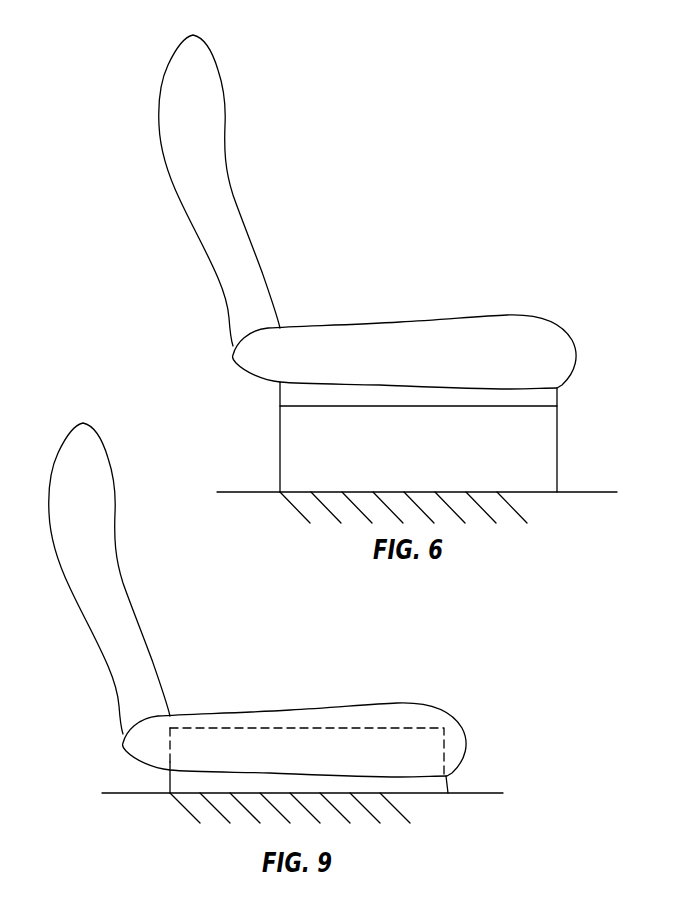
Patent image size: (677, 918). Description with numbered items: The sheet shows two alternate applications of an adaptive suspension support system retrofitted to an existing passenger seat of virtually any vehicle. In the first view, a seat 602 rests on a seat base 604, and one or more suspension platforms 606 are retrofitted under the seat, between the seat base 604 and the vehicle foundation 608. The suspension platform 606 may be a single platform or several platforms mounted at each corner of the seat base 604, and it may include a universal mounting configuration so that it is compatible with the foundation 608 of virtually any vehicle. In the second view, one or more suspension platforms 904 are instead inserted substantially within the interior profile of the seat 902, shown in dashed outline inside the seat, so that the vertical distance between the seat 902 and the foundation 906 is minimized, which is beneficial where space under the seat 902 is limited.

In FIG. 6, the seat cushion 602 is at (522, 337).
In FIG. 6, the seat base 604 is at (288, 395).
In FIG. 6, the suspension platform 606 is at (288, 455).
In FIG. 6, the foundation 608 is at (610, 492).
In FIG. 9, the seat 902 is at (410, 723).
In FIG. 9, the suspension platform 904 is at (178, 783).
In FIG. 9, the foundation 906 is at (110, 793).